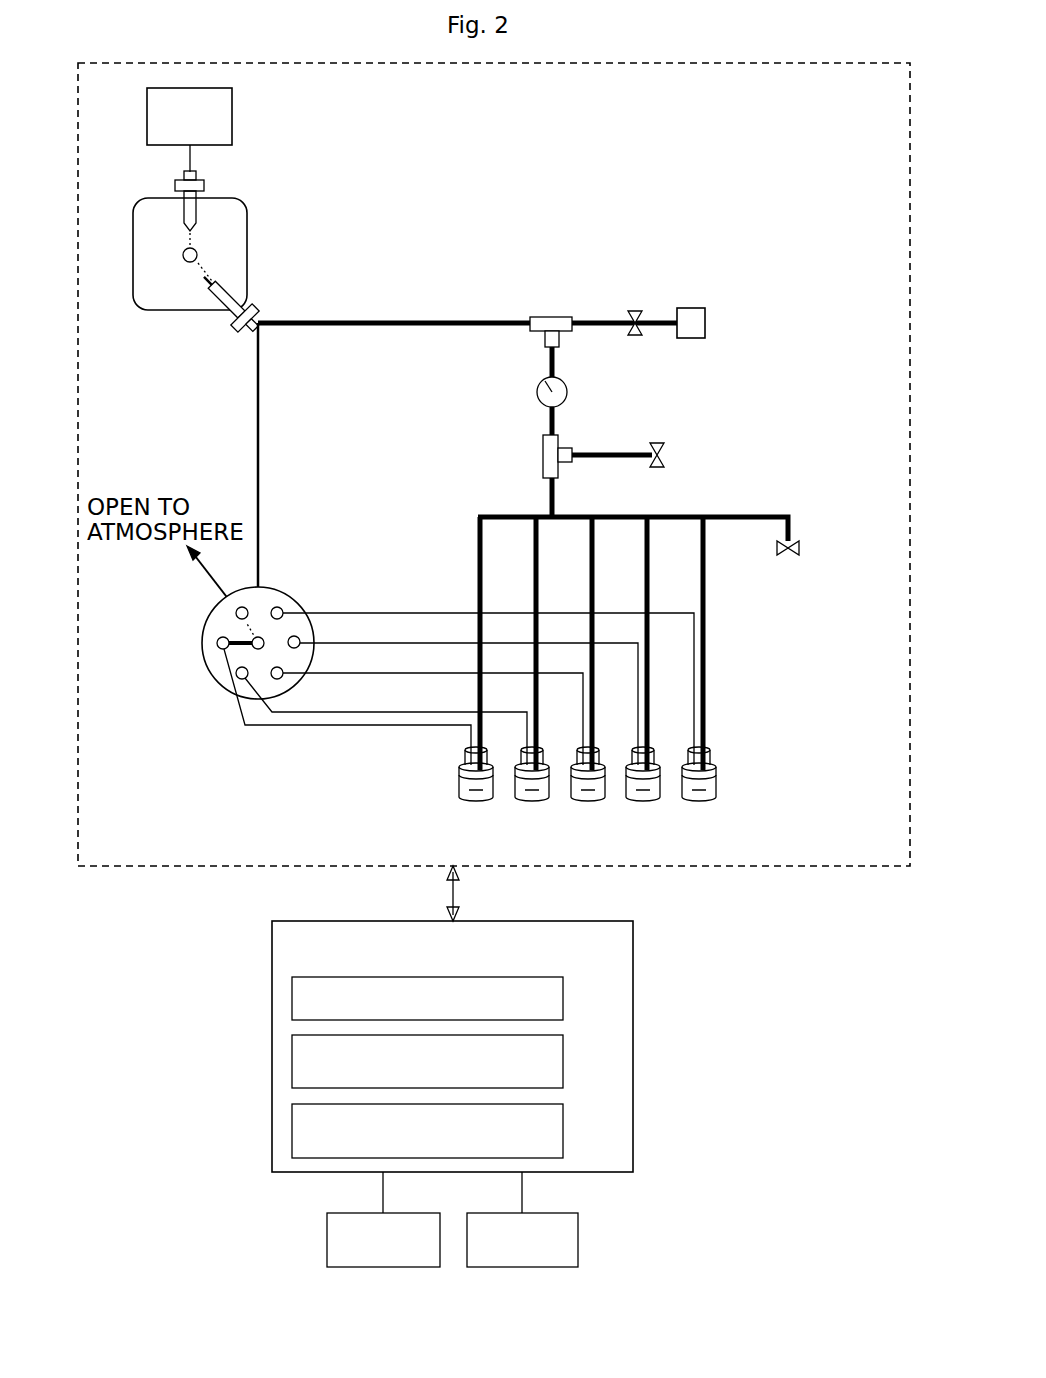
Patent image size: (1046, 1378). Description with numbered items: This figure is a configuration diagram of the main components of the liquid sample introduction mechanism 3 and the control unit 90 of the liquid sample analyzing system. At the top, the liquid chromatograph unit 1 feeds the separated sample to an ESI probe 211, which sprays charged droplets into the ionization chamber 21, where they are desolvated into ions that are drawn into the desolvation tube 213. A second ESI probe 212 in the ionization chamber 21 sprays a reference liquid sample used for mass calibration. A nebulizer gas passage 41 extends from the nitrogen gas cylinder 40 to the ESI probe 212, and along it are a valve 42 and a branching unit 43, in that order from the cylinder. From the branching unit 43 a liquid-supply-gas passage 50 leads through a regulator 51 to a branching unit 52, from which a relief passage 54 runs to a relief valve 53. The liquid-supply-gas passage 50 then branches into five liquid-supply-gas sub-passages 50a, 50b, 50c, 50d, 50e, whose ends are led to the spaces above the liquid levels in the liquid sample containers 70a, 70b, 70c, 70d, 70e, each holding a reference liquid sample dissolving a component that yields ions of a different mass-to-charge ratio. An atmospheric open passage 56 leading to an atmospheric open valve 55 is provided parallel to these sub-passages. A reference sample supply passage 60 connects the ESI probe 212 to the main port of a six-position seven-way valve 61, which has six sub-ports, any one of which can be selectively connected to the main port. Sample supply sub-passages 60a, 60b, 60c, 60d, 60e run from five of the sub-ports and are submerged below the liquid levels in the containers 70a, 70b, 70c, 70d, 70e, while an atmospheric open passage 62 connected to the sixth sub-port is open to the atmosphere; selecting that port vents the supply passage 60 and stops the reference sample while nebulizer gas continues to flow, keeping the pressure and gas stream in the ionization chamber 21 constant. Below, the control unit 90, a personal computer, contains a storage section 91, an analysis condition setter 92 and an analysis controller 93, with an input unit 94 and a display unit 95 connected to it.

The liquid chromatograph unit 1 is at (232, 117).
The ESI probe 211 is at (205, 186).
The ionization chamber 21 is at (247, 228).
The desolvation tube 213 is at (184, 262).
The ESI probe 212 is at (260, 300).
The liquid sample introduction mechanism 3 is at (684, 240).
The nebulizer gas passage 41 is at (415, 320).
The branching unit 43 is at (553, 316).
The valve 42 is at (636, 311).
The nitrogen gas cylinder 40 is at (690, 308).
The liquid-supply-gas passage 50 is at (549, 368).
The regulator 51 is at (567, 392).
The branching unit 52 is at (542, 452).
The relief passage 54 is at (596, 452).
The relief valve 53 is at (660, 443).
The atmospheric open passage 56 is at (790, 523).
The atmospheric open valve 55 is at (800, 552).
The liquid-supply-gas sub-passage 50a is at (482, 531).
The liquid-supply-gas sub-passage 50b is at (538, 531).
The liquid-supply-gas sub-passage 50c is at (594, 531).
The liquid-supply-gas sub-passage 50d is at (649, 531).
The liquid-supply-gas sub-passage 50e is at (705, 531).
The reference sample supply passage 60 is at (259, 448).
The six-position seven-way valve 61 is at (292, 596).
The atmospheric open passage 62 is at (217, 589).
The sample supply sub-passage 60a is at (345, 727).
The sample supply sub-passage 60b is at (345, 712).
The sample supply sub-passage 60c is at (345, 672).
The sample supply sub-passage 60d is at (345, 642).
The sample supply sub-passage 60e is at (345, 612).
The liquid sample container 70a is at (479, 802).
The liquid sample container 70b is at (535, 802).
The liquid sample container 70c is at (591, 802).
The liquid sample container 70d is at (646, 802).
The liquid sample container 70e is at (702, 802).
The control unit 90 is at (634, 962).
The storage section 91 is at (565, 997).
The analysis condition setter 92 is at (565, 1055).
The analysis controller 93 is at (565, 1125).
The input unit 94 is at (400, 1268).
The display unit 95 is at (537, 1268).